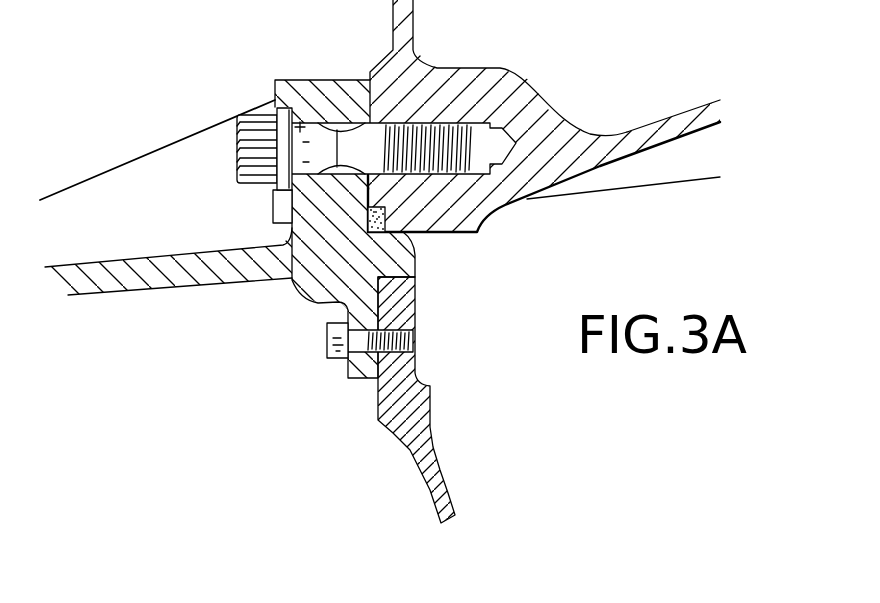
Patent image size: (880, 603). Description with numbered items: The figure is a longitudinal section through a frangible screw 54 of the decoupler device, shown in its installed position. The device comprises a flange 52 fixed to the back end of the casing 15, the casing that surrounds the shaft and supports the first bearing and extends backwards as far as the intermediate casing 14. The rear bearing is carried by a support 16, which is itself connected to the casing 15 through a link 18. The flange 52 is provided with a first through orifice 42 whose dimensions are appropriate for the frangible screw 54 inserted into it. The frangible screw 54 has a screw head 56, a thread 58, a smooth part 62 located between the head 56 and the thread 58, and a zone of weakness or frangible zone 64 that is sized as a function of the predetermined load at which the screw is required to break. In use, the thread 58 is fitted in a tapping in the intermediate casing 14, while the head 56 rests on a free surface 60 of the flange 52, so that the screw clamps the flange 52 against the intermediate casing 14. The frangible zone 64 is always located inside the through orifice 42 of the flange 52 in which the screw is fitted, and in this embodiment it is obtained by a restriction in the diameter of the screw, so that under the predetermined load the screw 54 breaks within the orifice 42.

The intermediate casing 14 is at (672, 118).
The casing 15 is at (102, 295).
The support 16 is at (450, 506).
The link 18 is at (327, 345).
The first through orifice 42 is at (417, 60).
The flange 52 is at (314, 206).
The frangible screw 54 is at (218, 155).
The screw head 56 is at (246, 142).
The thread 58 is at (465, 176).
The free surface 60 is at (276, 204).
The smooth part 62 is at (300, 125).
The frangible zone 64 is at (420, 232).